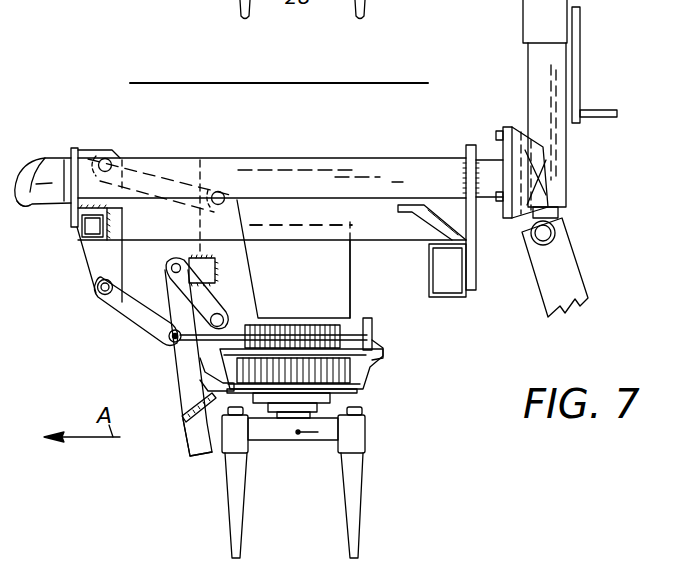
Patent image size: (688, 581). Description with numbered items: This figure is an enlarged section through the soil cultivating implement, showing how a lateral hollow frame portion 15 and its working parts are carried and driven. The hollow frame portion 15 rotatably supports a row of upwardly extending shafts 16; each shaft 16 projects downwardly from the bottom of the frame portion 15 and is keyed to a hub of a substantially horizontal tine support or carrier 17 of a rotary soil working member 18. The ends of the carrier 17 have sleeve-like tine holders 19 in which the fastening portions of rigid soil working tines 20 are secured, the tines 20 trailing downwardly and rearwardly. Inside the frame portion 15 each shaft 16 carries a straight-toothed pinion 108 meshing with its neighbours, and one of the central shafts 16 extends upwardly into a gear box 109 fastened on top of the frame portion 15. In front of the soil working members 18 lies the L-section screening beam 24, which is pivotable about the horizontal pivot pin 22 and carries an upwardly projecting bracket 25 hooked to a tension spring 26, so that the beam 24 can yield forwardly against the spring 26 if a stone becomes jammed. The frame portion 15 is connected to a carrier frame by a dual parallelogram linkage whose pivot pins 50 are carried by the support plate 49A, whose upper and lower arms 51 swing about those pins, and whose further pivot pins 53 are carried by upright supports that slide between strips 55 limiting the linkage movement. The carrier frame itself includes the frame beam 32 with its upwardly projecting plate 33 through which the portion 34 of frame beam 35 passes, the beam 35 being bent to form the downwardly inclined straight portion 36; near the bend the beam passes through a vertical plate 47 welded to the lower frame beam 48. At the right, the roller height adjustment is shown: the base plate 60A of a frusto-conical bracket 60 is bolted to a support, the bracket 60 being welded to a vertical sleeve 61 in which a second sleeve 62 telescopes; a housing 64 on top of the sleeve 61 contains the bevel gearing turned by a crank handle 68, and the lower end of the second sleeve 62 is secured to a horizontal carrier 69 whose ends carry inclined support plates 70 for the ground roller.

The hollow frame portion 15 is at (377, 360).
The shaft 16 is at (298, 418).
The tine support or carrier 17 is at (266, 426).
The rotary soil working member 18 is at (358, 527).
The tine holder 19 is at (223, 456).
The soil working tine 20 is at (237, 513).
The pivot pin 22 is at (166, 268).
The screening beam 24 is at (191, 433).
The bracket 25 is at (181, 355).
The tension spring 26 is at (282, 330).
The frame beam 32 is at (462, 299).
The upwardly projecting plate 33 is at (476, 268).
The beam portion 34 is at (417, 128).
The frame beam 35 is at (20, 160).
The straight portion 36 is at (47, 158).
The vertical plate 47 is at (77, 150).
The frame beam 48 is at (76, 232).
The support plate 49A is at (81, 268).
The pivot pin 50 is at (122, 144).
The arm 51 is at (152, 173).
The pivot pin 53 is at (220, 180).
The strip 55 is at (297, 194).
The frusto-conical bracket 60 is at (537, 170).
The base plate 60A is at (508, 128).
The sleeve 61 is at (543, 70).
The second sleeve 62 is at (557, 213).
The housing 64 is at (527, 17).
The crank handle 68 is at (580, 63).
The carrier 69 is at (557, 236).
The support plate 70 is at (570, 278).
The pinion 108 is at (347, 378).
The gear box 109 is at (327, 287).